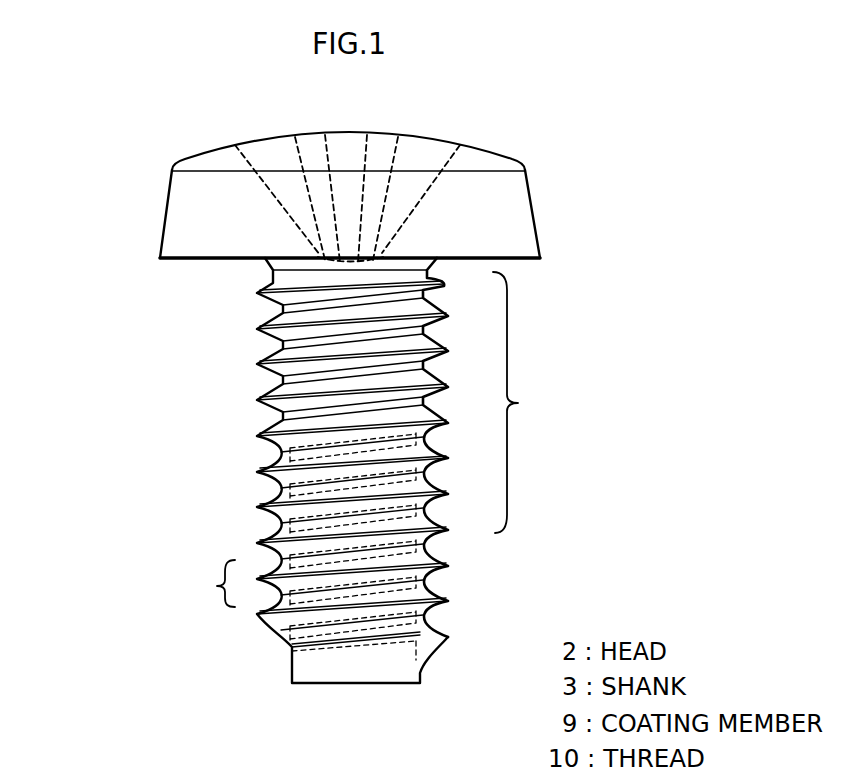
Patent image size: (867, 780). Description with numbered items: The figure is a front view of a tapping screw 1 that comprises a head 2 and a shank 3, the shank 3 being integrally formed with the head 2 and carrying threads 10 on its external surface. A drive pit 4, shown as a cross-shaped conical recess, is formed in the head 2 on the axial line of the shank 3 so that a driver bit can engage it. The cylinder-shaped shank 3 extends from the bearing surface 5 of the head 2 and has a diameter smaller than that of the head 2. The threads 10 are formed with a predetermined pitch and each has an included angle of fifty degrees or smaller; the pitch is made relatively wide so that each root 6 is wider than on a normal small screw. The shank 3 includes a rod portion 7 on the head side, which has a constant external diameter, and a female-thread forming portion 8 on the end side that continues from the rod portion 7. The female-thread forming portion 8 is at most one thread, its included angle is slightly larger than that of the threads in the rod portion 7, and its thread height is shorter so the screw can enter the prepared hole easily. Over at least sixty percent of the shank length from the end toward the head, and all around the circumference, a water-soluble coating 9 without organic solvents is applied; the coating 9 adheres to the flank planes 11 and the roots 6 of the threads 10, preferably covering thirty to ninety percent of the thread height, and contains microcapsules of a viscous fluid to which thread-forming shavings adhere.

The tapping screw 1 is at (125, 192).
The head 2 is at (227, 188).
The shank 3 is at (290, 346).
The drive pit 4 is at (422, 193).
The bearing surface 5 is at (197, 262).
The root 6 is at (273, 457).
The rod portion 7 is at (516, 402).
The female-thread forming portion 8 is at (215, 583).
The coating 9 is at (265, 522).
The threads 10 is at (450, 528).
The flank planes 11 is at (282, 393).